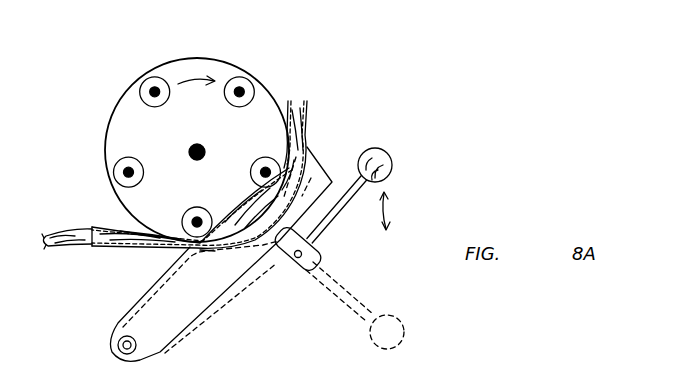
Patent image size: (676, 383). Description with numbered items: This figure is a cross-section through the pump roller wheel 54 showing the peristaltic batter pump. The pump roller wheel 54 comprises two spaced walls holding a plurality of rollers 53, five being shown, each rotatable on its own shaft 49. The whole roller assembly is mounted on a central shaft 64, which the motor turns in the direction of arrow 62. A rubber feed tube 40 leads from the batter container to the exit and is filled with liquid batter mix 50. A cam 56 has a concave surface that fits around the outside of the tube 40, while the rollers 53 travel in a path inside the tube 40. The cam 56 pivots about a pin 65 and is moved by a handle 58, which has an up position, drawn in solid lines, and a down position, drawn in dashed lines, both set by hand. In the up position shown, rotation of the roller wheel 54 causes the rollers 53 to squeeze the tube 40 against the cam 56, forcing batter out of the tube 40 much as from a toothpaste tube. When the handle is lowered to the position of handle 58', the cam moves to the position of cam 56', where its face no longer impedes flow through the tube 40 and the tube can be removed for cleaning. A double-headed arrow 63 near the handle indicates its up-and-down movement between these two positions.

The rubber feed tube 40 is at (304, 141).
The roller shafts 49 is at (151, 87).
The liquid batter mix 50 is at (295, 103).
The rollers 53 is at (237, 105).
The pump roller wheel 54 is at (176, 66).
The cam 56 is at (221, 254).
The cam in down position 56' is at (204, 300).
The handle 58 is at (354, 203).
The handle in down position 58' is at (368, 305).
The arrow 62 is at (202, 84).
The movement arrow 63 is at (388, 207).
The shaft 64 is at (206, 153).
The pin 65 is at (116, 344).